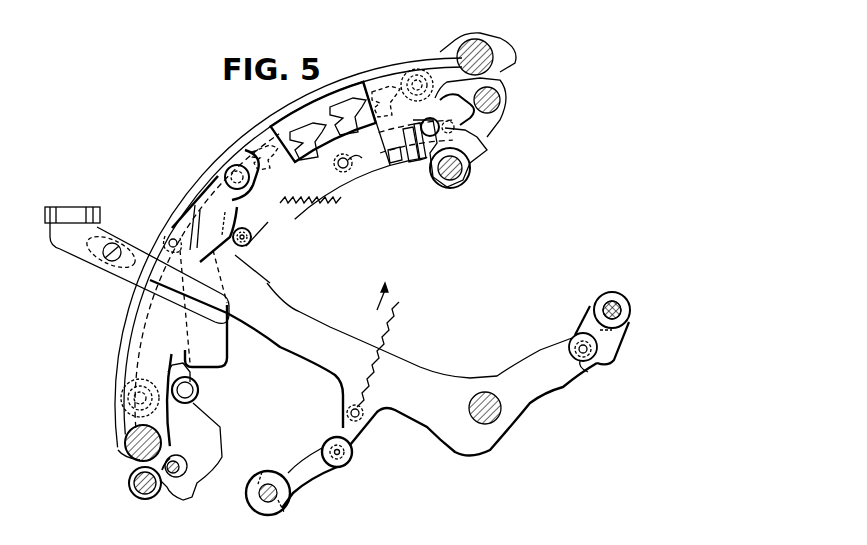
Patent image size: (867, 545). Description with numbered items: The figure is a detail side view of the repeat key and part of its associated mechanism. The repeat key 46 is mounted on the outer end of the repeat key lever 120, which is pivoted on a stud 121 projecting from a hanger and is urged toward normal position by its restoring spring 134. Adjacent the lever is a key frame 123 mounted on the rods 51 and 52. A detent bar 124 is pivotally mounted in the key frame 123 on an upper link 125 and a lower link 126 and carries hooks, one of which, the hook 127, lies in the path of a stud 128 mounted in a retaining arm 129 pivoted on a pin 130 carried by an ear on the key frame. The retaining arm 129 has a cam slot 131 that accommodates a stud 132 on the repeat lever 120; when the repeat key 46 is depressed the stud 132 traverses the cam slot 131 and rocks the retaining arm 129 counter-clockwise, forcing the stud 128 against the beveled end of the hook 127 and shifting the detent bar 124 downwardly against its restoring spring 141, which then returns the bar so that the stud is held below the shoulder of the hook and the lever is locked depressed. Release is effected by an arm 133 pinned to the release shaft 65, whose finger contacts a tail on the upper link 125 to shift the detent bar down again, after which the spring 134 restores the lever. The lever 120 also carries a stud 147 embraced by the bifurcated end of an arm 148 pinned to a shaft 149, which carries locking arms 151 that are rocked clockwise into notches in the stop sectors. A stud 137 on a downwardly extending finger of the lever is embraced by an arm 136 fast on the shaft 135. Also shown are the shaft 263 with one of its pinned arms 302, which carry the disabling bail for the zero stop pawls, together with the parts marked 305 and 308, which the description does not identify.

The repeat key 46 is at (100, 190).
The rod 51 is at (494, 44).
The rod 52 is at (128, 450).
The release shaft 65 is at (500, 100).
The repeat key lever 120 is at (293, 305).
The stud 121 is at (484, 396).
The key frame 123 is at (443, 52).
The detent bar 124 is at (363, 142).
The link 125 is at (387, 158).
The link 126 is at (198, 402).
The hook 127 is at (190, 230).
The stud 128 is at (170, 240).
The retaining arm 129 is at (207, 180).
The pin 130 is at (232, 172).
The cam slot 131 is at (240, 283).
The stud 132 is at (255, 240).
The arm 133 is at (495, 83).
The restoring spring 134 is at (384, 320).
The shaft 135 is at (274, 480).
The arm 136 is at (305, 452).
The stud 137 is at (340, 423).
The restoring spring 141 is at (329, 188).
The stud 147 is at (578, 360).
The arm 148 is at (588, 326).
The shaft 149 is at (617, 306).
The locking arm 151 is at (620, 340).
The shaft 263 is at (133, 482).
The arm 302 is at (165, 487).
The arm 305 is at (495, 120).
The link 308 is at (176, 464).